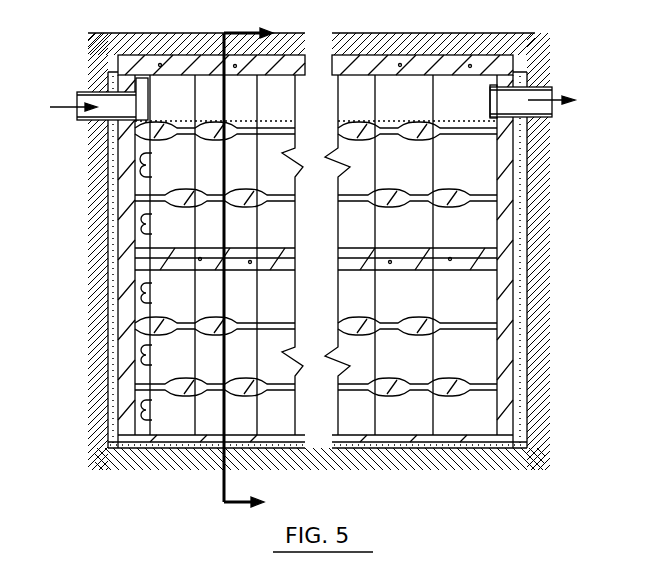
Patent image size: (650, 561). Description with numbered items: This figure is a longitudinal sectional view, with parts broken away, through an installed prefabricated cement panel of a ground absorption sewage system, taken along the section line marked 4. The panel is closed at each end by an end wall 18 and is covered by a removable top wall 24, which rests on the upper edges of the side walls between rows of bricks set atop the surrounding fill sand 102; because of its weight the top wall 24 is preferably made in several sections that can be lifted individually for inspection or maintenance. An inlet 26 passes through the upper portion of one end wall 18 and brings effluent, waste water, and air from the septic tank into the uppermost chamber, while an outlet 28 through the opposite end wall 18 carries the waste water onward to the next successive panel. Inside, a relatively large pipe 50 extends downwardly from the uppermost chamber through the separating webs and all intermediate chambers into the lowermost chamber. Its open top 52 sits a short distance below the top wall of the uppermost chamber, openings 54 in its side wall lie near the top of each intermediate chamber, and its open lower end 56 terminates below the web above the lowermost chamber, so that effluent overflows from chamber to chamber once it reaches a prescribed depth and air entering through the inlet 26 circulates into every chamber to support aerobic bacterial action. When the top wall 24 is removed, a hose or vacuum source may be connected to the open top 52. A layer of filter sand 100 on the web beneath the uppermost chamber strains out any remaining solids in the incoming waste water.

The section line 4- 4 is at (250, 43).
The end wall 18 is at (507, 260).
The top wall 24 is at (450, 62).
The inlet 26 is at (80, 121).
The outlet 28 is at (548, 117).
The pipe 50 is at (152, 160).
The open top 52 is at (150, 80).
The openings 54 is at (150, 221).
The open lower end 56 is at (147, 412).
The filter sand 100 is at (400, 150).
The fill sand 102 is at (535, 364).